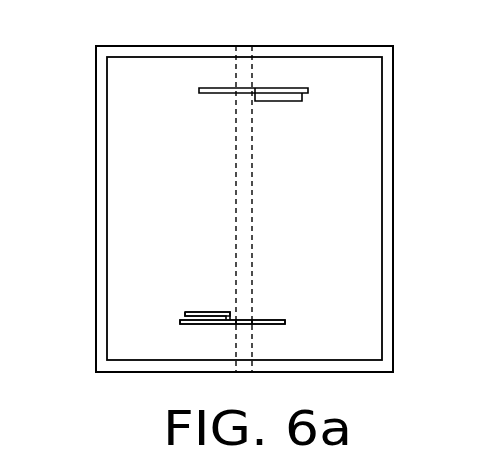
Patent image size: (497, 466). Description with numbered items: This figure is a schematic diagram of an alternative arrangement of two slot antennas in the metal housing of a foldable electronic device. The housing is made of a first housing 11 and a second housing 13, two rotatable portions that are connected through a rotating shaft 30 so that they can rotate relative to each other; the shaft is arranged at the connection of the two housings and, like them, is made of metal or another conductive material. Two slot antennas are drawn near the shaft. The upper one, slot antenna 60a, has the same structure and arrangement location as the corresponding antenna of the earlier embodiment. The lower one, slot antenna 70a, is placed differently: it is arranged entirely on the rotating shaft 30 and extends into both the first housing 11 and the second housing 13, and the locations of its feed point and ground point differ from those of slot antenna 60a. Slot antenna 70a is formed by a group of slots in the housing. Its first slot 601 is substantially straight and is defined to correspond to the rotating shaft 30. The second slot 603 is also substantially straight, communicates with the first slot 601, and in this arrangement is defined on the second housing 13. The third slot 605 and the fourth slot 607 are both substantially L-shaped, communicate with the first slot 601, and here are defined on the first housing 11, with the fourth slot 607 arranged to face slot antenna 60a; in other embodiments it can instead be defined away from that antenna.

The first housing 11 is at (158, 52).
The second housing 13 is at (310, 53).
The rotating shaft 30 is at (252, 227).
The slot antenna 60a is at (297, 110).
The slot antenna 70a is at (193, 302).
The first slot 601 is at (242, 322).
The second slot 603 is at (273, 320).
The third slot 605 is at (180, 321).
The fourth slot 607 is at (185, 311).